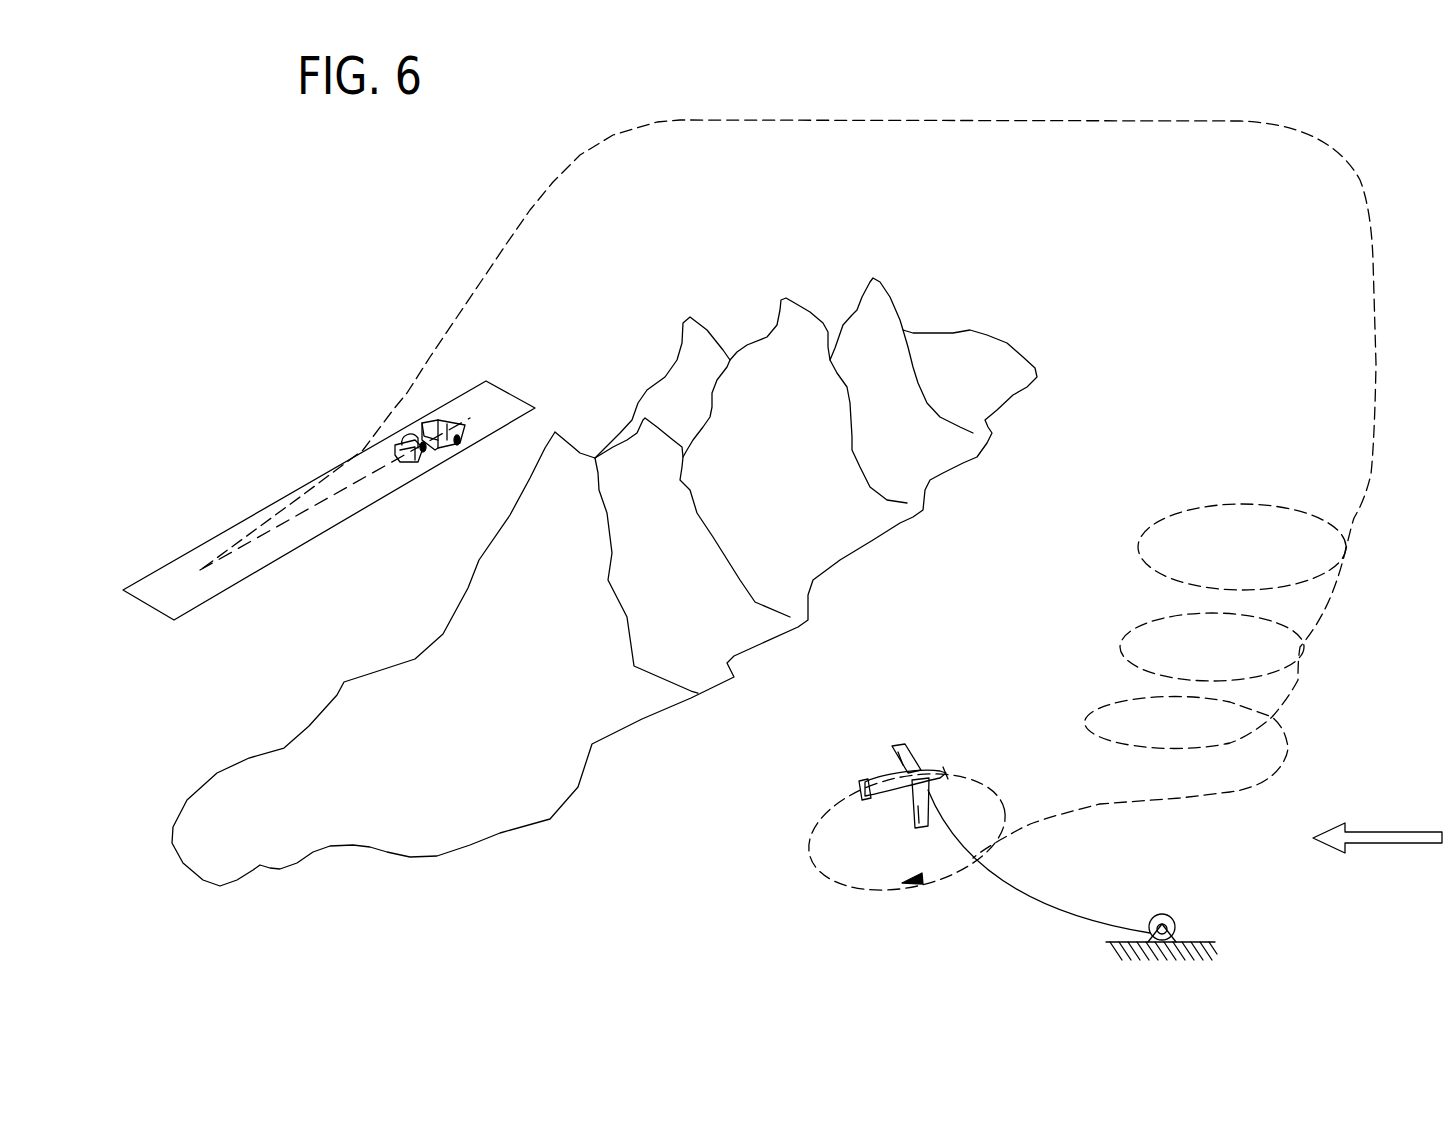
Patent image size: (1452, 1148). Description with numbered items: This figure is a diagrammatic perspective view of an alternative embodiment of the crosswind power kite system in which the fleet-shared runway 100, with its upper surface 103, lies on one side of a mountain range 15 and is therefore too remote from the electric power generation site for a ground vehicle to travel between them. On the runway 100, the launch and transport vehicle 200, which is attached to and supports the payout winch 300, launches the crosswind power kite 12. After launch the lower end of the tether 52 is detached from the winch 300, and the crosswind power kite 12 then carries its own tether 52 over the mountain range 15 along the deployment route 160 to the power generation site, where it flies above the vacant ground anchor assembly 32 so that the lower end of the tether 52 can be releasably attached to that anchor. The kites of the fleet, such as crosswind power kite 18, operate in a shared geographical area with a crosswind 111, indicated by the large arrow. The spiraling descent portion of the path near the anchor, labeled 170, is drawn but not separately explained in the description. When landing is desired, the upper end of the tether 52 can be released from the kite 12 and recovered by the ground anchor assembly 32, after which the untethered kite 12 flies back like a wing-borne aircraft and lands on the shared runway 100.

The deployment route 160 is at (944, 120).
The fleet-shared runway 100 is at (212, 533).
The upper surface 103 is at (270, 550).
The launch and transport vehicle 200 is at (445, 444).
The payout winch 300 is at (417, 447).
The mountain range 15 is at (962, 352).
The spiral descent path 170 is at (1345, 592).
The crosswind power kite 18 is at (980, 777).
The crosswind power kite 12 is at (898, 745).
The tether 52 is at (1032, 905).
The ground anchor assembly 32 is at (1162, 908).
The crosswind 111 is at (1397, 830).